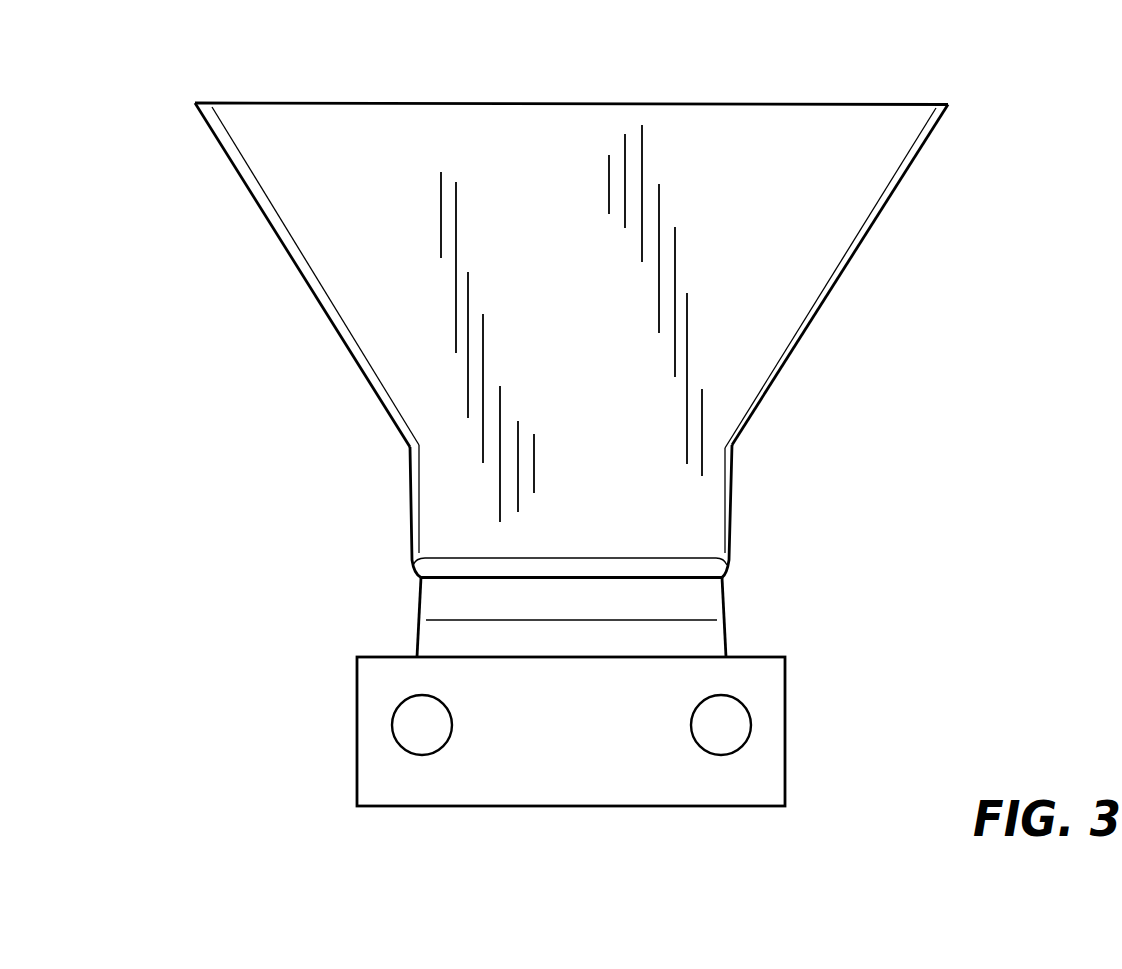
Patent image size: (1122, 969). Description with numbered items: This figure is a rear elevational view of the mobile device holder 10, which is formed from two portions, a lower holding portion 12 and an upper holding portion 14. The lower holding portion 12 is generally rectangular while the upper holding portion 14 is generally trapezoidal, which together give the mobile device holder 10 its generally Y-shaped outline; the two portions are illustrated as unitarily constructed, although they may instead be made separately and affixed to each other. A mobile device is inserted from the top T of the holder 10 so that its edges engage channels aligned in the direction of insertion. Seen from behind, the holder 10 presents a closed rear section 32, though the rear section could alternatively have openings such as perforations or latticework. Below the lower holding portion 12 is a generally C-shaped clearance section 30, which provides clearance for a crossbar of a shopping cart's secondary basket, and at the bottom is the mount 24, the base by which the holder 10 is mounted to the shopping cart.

The mobile device holder 10 is at (601, 419).
The lower holding portion 12 is at (708, 511).
The upper holding portion 14 is at (823, 253).
The closed rear section 32 is at (312, 244).
The clearance section 30 is at (713, 603).
The mount 24 is at (772, 775).
The top T is at (522, 103).